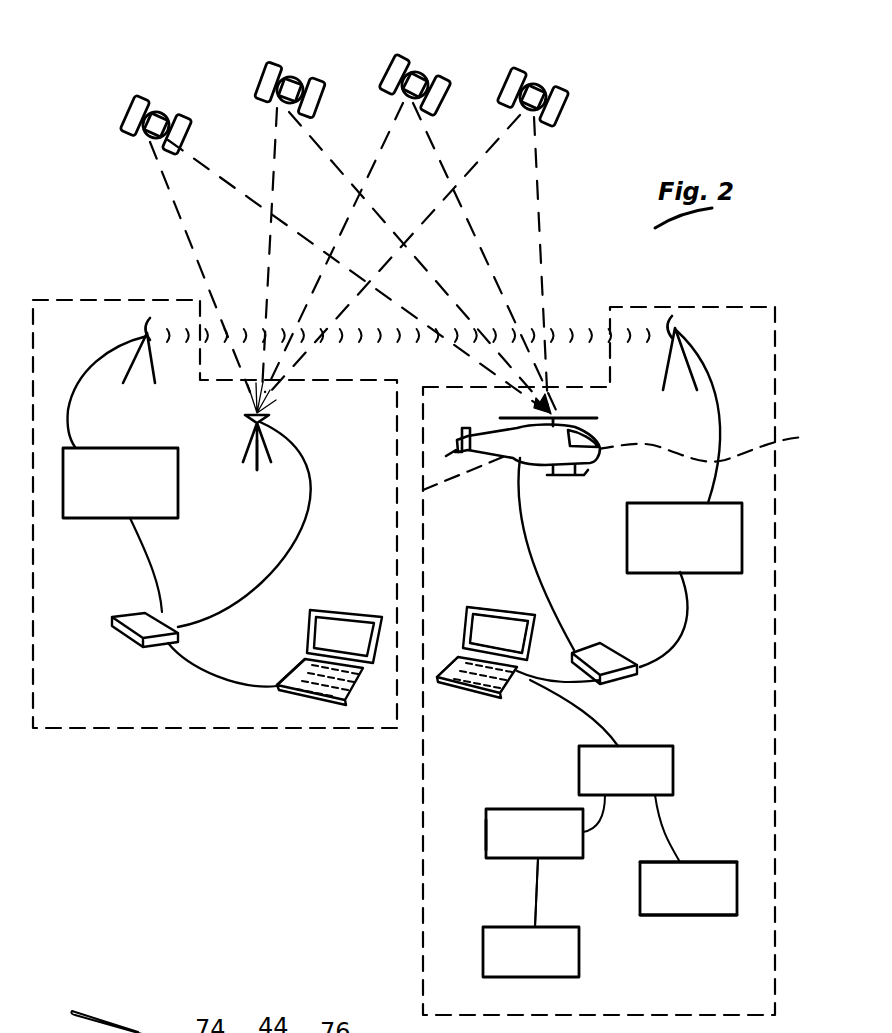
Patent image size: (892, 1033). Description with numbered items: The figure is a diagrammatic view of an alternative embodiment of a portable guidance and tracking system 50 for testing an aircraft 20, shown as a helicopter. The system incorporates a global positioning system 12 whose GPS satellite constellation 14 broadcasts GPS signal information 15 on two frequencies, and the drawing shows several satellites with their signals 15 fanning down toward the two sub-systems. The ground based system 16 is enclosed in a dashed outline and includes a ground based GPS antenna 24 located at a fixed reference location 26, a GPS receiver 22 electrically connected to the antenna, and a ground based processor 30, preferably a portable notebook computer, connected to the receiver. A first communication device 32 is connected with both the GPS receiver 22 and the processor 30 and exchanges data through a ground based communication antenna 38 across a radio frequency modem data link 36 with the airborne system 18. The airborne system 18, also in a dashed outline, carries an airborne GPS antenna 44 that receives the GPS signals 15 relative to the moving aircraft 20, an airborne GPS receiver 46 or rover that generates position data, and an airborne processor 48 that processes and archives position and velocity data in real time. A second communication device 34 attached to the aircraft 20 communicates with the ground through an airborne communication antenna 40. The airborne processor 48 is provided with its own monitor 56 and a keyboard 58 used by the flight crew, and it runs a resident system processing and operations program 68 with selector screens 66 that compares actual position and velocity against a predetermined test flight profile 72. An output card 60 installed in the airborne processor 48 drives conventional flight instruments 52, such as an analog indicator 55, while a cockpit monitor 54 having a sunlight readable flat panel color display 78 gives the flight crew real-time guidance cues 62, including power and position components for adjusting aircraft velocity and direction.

The global positioning system 12 is at (357, 96).
The GPS satellite constellation 14 is at (165, 110).
The GPS signal information 15 is at (243, 203).
The ground based system 16 is at (198, 730).
The airborne system 18 is at (777, 393).
The aircraft 20 is at (605, 452).
The GPS receiver 22 is at (122, 640).
The ground based GPS antenna 24 is at (270, 419).
The reference location 26 is at (261, 456).
The ground based processor 30 is at (362, 690).
The first communication device 32 is at (63, 512).
The second communication device 34 is at (742, 540).
The radio frequency modem data link 36 is at (392, 348).
The ground based communication antenna 38 is at (140, 323).
The airborne communication antenna 40 is at (680, 322).
The airborne GPS antenna 44 is at (556, 413).
The airborne GPS receiver 46 is at (630, 678).
The airborne processor 48 is at (500, 685).
The portable guidance and tracking system 50 is at (136, 264).
The flight instruments 52 is at (708, 862).
The monitor 54 is at (487, 832).
The analog indicator 55 is at (674, 915).
The monitor 56 is at (492, 625).
The keyboard 58 is at (450, 665).
The output card 60 is at (673, 764).
The guidance cues 62 is at (503, 927).
The selector screens 66 is at (490, 838).
The resident system processing and operations program 68 is at (290, 690).
The predetermined test flight profile 72 is at (785, 440).
The flat panel color display 78 is at (563, 847).